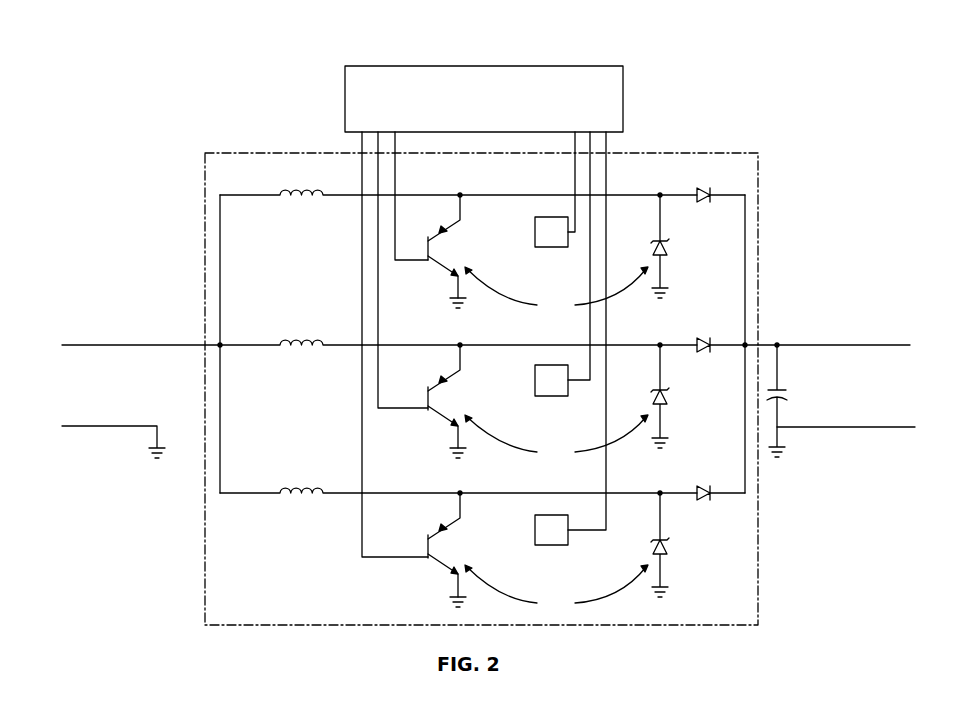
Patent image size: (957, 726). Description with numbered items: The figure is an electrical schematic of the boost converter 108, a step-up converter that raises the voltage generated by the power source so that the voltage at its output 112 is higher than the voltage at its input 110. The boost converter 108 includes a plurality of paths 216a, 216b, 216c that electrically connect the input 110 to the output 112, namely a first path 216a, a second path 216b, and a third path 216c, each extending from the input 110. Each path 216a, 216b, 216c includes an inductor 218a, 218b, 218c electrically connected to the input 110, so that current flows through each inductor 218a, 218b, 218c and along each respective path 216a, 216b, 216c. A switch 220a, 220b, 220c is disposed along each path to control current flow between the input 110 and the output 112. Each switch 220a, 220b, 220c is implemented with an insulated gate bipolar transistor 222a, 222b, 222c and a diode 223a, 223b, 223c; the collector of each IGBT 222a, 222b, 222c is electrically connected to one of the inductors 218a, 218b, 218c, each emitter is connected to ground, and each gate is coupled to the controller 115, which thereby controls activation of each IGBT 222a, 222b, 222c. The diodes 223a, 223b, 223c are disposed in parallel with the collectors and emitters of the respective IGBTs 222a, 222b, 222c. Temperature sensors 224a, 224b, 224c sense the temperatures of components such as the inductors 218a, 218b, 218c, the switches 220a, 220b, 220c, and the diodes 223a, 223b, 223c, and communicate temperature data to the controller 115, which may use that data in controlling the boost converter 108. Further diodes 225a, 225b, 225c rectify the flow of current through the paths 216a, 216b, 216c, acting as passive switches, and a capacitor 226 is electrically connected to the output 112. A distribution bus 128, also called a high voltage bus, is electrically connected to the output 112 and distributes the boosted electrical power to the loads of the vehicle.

The boost converter 108 is at (220, 153).
The input 110 is at (200, 348).
The output 112 is at (765, 345).
The controller 115 is at (345, 100).
The distribution bus 128 is at (890, 347).
The first path 216a is at (558, 195).
The second path 216b is at (558, 345).
The third path 216c is at (558, 493).
The inductor 218a is at (298, 189).
The inductor 218b is at (298, 339).
The inductor 218c is at (298, 487).
The switch 220a is at (556, 292).
The switch 220b is at (556, 439).
The switch 220c is at (556, 590).
The insulated gate bipolar transistor 222a is at (425, 261).
The insulated gate bipolar transistor 222b is at (425, 411).
The insulated gate bipolar transistor 222c is at (424, 559).
The diode 223a is at (663, 256).
The diode 223b is at (663, 405).
The diode 223c is at (663, 555).
The temperature sensor 224a is at (555, 248).
The temperature sensor 224b is at (555, 397).
The temperature sensor 224c is at (555, 546).
The diode 225a is at (706, 192).
The diode 225b is at (706, 342).
The diode 225c is at (706, 490).
The capacitor 226 is at (786, 390).